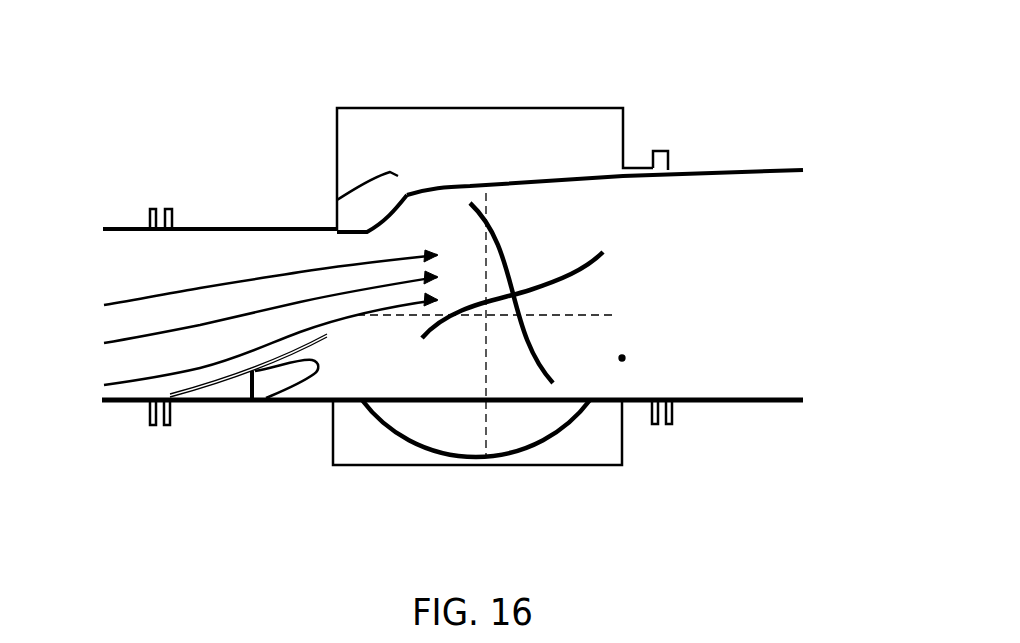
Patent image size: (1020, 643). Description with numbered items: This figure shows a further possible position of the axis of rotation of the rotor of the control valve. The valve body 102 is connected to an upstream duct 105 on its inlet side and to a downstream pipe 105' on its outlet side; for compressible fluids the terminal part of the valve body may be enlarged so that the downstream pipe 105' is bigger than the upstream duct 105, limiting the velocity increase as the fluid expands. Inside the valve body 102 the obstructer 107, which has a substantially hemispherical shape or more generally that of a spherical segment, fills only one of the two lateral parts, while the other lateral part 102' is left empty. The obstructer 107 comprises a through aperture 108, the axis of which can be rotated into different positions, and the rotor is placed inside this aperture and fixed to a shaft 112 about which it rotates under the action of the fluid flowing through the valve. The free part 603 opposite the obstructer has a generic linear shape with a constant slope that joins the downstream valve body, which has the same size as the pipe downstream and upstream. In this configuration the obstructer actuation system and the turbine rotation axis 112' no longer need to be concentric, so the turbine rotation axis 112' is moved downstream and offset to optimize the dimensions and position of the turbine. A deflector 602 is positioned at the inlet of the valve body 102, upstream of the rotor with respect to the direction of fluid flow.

The free part 603 is at (552, 180).
The other lateral part 102' is at (311, 171).
The turbine rotation axis 112' is at (546, 289).
The shaft 112 is at (485, 395).
The through aperture 108 is at (622, 358).
The upstream duct 105 is at (127, 437).
The downstream pipe 105' is at (717, 438).
The deflector 602 is at (262, 400).
The valve body 102 is at (302, 410).
The obstructer 107 is at (490, 420).